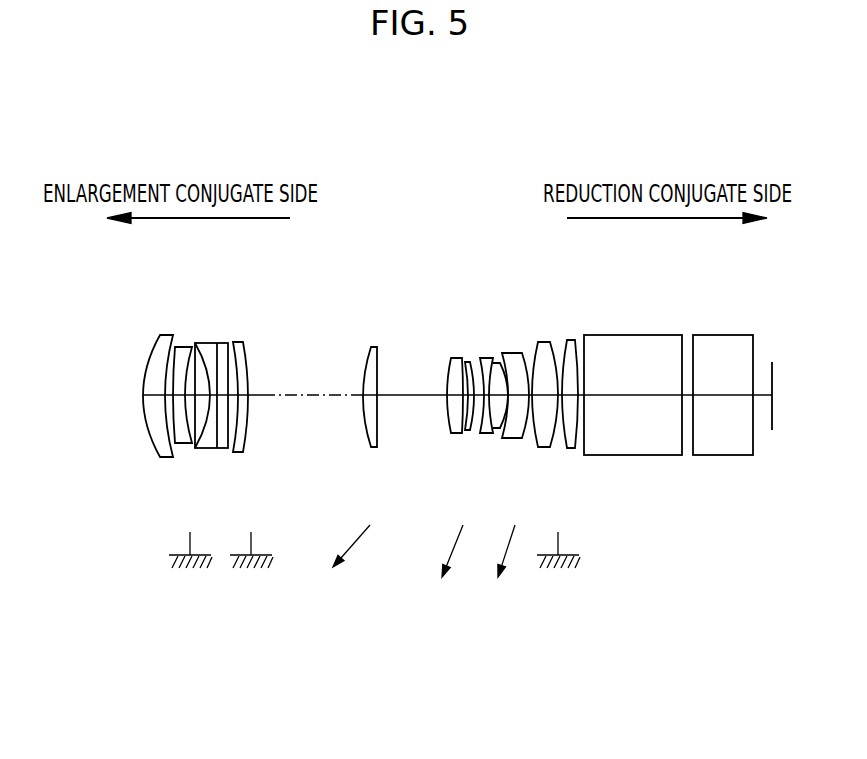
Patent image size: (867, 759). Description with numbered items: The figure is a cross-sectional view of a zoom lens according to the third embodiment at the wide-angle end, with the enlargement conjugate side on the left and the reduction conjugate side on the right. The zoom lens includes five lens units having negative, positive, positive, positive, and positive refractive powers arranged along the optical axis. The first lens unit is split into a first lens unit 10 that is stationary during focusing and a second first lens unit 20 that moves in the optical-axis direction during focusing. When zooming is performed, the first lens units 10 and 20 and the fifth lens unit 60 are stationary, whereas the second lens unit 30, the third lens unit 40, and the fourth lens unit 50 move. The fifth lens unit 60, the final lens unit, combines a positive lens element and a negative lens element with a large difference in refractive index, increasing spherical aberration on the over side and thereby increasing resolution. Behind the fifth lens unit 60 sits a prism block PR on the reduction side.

The first lens unit 10 is at (230, 473).
The second first lens unit 20 is at (247, 452).
The second lens unit 30 is at (372, 447).
The third lens unit 40 is at (445, 471).
The fourth lens unit 50 is at (553, 471).
The fifth lens unit 60 is at (571, 449).
The prism PR is at (680, 455).